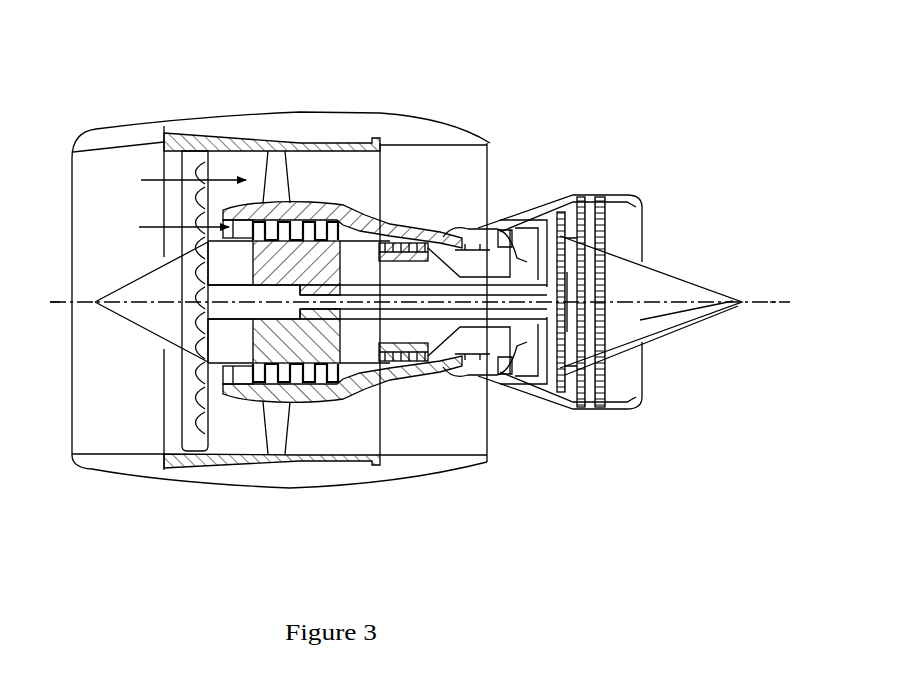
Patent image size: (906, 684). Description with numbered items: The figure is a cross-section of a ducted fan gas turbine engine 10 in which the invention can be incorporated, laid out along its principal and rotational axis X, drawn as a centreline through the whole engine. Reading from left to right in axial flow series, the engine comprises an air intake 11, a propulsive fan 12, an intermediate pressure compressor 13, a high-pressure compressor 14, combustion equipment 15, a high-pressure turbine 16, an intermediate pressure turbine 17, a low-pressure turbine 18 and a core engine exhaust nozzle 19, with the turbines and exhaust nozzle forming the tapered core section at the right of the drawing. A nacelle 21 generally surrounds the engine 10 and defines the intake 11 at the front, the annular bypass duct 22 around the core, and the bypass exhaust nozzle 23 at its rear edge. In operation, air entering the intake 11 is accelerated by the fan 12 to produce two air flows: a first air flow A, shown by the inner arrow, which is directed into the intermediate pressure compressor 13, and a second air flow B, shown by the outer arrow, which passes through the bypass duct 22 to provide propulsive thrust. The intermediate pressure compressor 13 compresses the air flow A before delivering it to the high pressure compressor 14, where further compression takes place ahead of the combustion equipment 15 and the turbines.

The ducted fan gas turbine engine 10 is at (136, 98).
The air intake 11 is at (118, 151).
The propulsive fan 12 is at (182, 409).
The intermediate pressure compressor 13 is at (303, 383).
The high-pressure compressor 14 is at (392, 243).
The combustion equipment 15 is at (460, 360).
The high-pressure turbine 16 is at (505, 385).
The intermediate pressure turbine 17 is at (515, 214).
The low-pressure turbine 18 is at (556, 396).
The core engine exhaust nozzle 19 is at (642, 205).
The nacelle 21 is at (283, 113).
The bypass duct 22 is at (458, 181).
The bypass exhaust nozzle 23 is at (490, 143).
The first air flow A is at (173, 229).
The second air flow B is at (184, 183).
The principal and rotational axis X is at (410, 303).